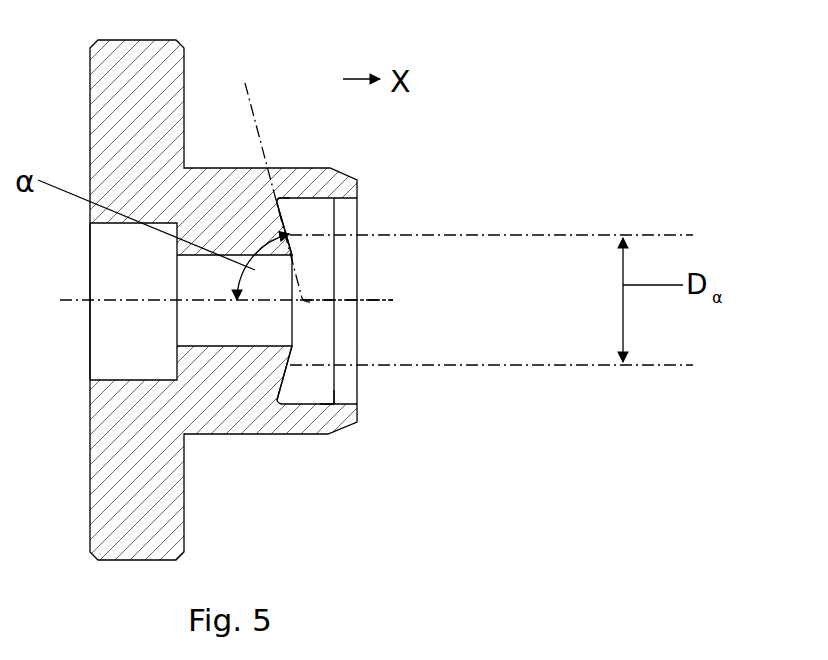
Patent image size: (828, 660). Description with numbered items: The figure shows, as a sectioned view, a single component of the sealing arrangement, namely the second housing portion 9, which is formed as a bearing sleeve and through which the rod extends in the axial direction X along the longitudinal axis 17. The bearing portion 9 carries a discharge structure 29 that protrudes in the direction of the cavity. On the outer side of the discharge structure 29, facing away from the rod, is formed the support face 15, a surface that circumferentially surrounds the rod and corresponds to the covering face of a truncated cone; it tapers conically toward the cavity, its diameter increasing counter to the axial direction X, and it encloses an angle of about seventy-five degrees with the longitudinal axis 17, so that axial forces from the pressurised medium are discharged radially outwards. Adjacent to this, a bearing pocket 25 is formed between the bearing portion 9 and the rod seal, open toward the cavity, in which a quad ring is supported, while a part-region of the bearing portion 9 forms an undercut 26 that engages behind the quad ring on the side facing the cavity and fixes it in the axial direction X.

The second housing portion 9 is at (316, 494).
The support face 15 is at (293, 237).
The longitudinal axis 17 is at (373, 300).
The bearing pocket 25 is at (340, 332).
The undercut 26 is at (326, 401).
The discharge structure 29 is at (265, 225).